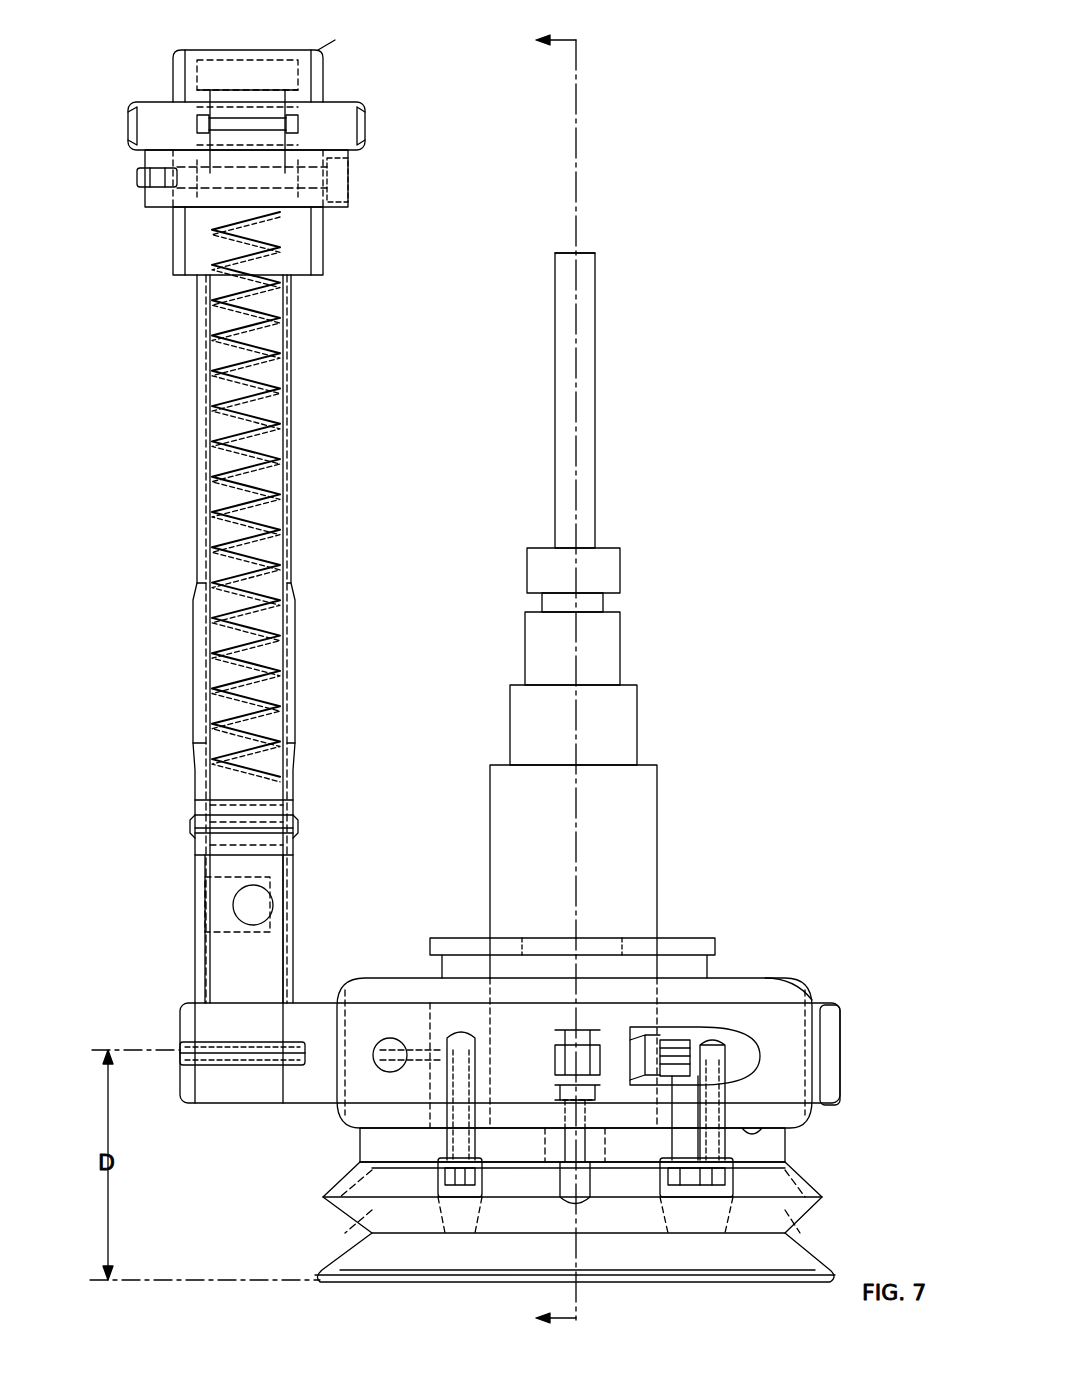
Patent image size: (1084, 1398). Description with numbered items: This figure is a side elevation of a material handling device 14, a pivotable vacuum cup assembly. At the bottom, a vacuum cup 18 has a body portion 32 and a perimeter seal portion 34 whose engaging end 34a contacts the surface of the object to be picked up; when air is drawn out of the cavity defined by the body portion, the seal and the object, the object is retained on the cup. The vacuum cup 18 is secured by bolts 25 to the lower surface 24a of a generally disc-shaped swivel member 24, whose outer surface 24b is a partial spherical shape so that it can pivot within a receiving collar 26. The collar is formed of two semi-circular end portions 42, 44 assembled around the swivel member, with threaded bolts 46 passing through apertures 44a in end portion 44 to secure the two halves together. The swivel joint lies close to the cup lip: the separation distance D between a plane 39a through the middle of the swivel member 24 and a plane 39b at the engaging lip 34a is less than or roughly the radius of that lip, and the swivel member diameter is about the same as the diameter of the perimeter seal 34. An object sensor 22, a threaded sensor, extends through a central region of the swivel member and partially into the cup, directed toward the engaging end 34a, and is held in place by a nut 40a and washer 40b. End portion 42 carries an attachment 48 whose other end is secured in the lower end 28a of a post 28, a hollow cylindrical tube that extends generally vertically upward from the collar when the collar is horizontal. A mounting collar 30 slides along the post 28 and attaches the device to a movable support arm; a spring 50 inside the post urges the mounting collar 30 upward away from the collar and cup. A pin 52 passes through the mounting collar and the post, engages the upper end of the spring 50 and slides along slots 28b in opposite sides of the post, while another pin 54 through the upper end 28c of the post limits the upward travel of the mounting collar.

The material handling device 14 is at (672, 194).
The vacuum cup 18 is at (296, 1237).
The object sensor 22 is at (686, 784).
The swivel member 24 is at (796, 976).
The lower surface of swivel member 24a is at (792, 1132).
The outer surface of swivel member 24b is at (812, 998).
The bolts 25 is at (714, 1182).
The receiving collar 26 is at (258, 1118).
The post 28 is at (316, 576).
The lower end of post 28a is at (296, 792).
The slots 28b is at (292, 498).
The upper end of post 28c is at (290, 112).
The mounting collar 30 is at (388, 118).
The body portion 32 is at (790, 1140).
The perimeter seal portion 34 is at (813, 1263).
The engaging end 34a is at (324, 1284).
The plane through middle of swivel member 39a is at (95, 1048).
The plane at engaging lip 39b is at (174, 1283).
The nut 40a is at (680, 945).
The washer 40b is at (460, 965).
The end portion 42 is at (183, 1078).
The end portion 44 is at (840, 1046).
The apertures 44a is at (634, 1033).
The bolts 46 is at (678, 1043).
The attachment 48 is at (220, 990).
The spring 50 is at (240, 538).
The pin 52 is at (135, 182).
The pin 54 is at (198, 124).